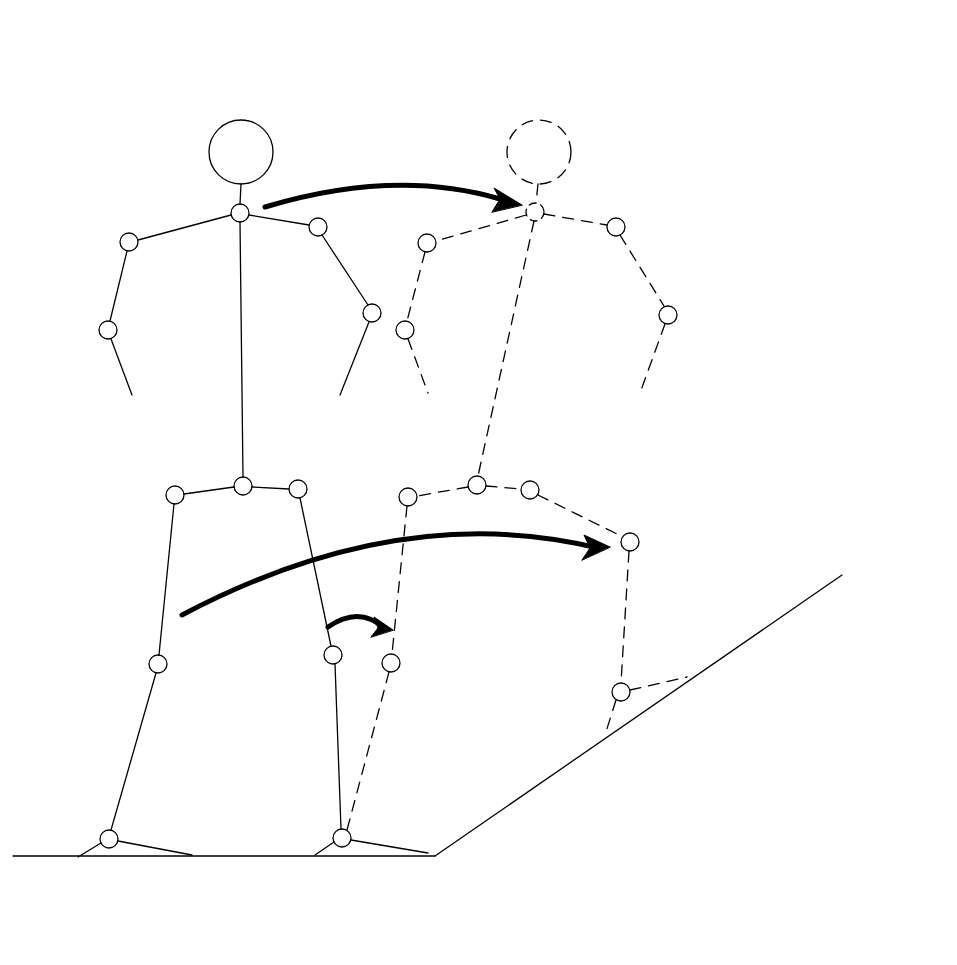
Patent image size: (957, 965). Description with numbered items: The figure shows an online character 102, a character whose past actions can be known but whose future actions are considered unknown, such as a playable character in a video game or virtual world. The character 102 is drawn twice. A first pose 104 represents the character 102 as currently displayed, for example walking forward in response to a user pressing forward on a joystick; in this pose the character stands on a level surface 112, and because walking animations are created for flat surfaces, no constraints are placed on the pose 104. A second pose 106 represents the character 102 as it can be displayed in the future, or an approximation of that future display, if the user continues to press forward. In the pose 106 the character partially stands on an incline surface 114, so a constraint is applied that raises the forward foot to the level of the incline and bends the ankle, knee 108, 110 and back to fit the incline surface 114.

The online character 102 is at (99, 46).
The first pose 104 is at (241, 120).
The second pose 106 is at (540, 120).
The knee joint of the first pose 108 is at (150, 661).
The knee joint of the second pose 110 is at (638, 536).
The level surface 112 is at (248, 858).
The incline surface 114 is at (572, 760).